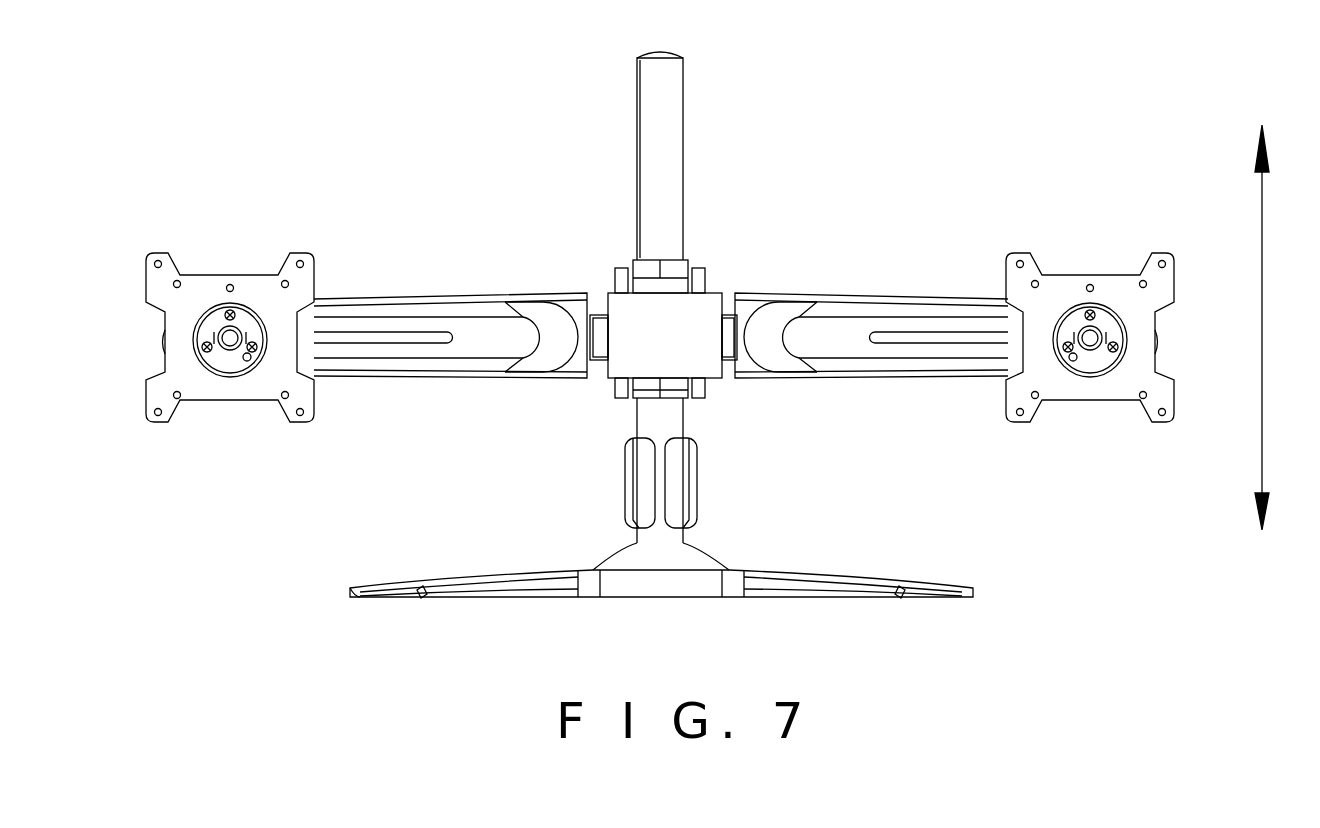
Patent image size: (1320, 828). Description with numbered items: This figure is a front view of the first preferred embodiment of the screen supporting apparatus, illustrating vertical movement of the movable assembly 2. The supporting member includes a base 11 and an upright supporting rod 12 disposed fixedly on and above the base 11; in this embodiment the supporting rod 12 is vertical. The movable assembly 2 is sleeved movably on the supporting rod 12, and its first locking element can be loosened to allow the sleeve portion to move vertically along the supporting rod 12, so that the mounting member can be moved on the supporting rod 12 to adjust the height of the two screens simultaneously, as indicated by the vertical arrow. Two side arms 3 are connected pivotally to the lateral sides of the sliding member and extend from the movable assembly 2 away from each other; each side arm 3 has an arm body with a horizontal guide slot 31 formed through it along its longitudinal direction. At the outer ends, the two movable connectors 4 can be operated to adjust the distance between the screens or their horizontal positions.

The movable assembly 2 is at (632, 304).
The side arms 3 is at (503, 313).
The movable connectors 4 is at (210, 285).
The base 11 is at (812, 572).
The supporting rod 12 is at (640, 186).
The horizontal guide slot 31 is at (383, 340).